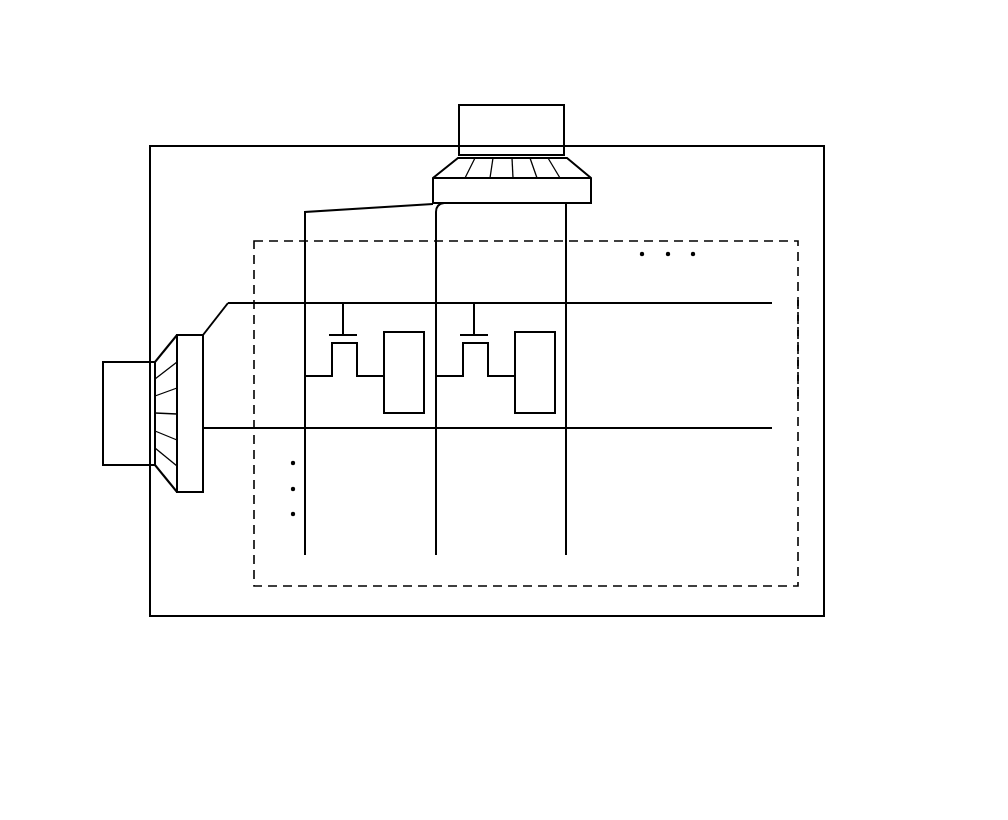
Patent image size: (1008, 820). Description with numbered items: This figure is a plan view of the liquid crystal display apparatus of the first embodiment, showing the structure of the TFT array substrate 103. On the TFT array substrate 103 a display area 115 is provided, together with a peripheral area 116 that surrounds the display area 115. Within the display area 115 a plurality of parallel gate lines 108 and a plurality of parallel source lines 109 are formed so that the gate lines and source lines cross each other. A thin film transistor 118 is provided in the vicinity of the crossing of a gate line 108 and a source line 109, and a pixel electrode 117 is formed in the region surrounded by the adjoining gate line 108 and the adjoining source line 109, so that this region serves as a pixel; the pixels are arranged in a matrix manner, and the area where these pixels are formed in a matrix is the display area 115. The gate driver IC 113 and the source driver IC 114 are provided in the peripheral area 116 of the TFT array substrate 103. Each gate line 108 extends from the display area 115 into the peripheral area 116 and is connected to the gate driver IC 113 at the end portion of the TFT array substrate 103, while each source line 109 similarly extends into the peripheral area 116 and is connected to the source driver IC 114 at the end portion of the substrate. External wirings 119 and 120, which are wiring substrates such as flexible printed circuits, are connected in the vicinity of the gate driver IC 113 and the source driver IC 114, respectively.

The TFT array substrate 103 is at (893, 644).
The gate line 108 is at (254, 440).
The source line 109 is at (303, 237).
The gate driver IC 113 is at (158, 362).
The source driver IC 114 is at (575, 172).
The display area 115 is at (808, 345).
The peripheral area 116 is at (168, 171).
The pixel electrode 117 is at (389, 322).
The thin film transistor 118 is at (356, 398).
The external wiring 119 is at (103, 422).
The external wiring 120 is at (512, 115).